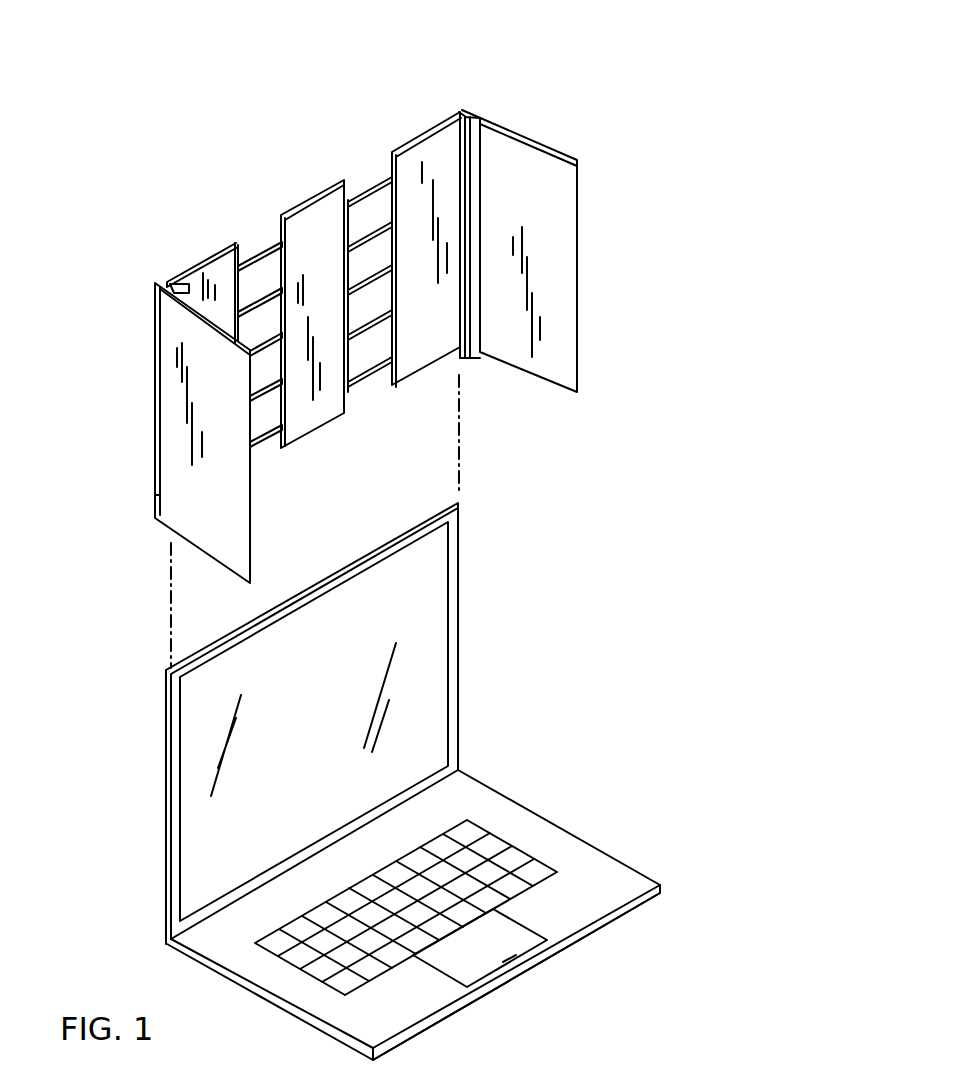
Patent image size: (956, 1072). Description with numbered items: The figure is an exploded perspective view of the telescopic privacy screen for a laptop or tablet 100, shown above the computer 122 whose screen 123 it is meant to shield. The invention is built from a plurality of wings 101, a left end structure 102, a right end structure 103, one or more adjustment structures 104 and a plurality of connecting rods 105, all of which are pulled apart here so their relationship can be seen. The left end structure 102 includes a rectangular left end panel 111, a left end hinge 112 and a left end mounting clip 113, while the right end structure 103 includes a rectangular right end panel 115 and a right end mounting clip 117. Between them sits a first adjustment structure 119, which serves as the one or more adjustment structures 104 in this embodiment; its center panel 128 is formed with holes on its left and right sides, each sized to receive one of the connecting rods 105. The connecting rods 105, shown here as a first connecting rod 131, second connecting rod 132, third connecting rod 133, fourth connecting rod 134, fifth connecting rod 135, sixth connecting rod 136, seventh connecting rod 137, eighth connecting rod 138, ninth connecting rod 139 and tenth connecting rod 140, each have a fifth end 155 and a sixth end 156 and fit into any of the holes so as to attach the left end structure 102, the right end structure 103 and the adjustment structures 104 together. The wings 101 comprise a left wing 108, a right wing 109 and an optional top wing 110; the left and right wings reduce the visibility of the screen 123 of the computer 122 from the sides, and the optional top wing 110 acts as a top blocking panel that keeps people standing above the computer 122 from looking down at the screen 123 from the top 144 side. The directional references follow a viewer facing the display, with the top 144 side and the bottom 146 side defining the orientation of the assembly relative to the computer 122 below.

The telescopic privacy screen for a laptop or tablet 100 is at (117, 125).
The plurality of wings 101 is at (187, 317).
The left end structure 102 is at (190, 419).
The right end structure 103 is at (575, 162).
The adjustment structures 104 is at (325, 188).
The plurality of connecting rods 105 is at (205, 257).
The left wing 108 is at (195, 500).
The right wing 109 is at (543, 268).
The optional top wing 110 is at (462, 108).
The left end panel 111 is at (193, 266).
The left end hinge 112 is at (157, 358).
The left end mounting clip 113 is at (183, 288).
The right end panel 115 is at (447, 120).
The right end mounting clip 117 is at (474, 115).
The first adjustment structure 119 is at (317, 417).
The computer 122 is at (535, 820).
The screen 123 is at (415, 632).
The center panel 128 is at (322, 303).
The first connecting rod 131 is at (262, 250).
The second connecting rod 132 is at (258, 310).
The third connecting rod 133 is at (258, 351).
The fourth connecting rod 134 is at (264, 392).
The fifth connecting rod 135 is at (257, 438).
The sixth connecting rod 136 is at (376, 193).
The seventh connecting rod 137 is at (366, 244).
The eighth connecting rod 138 is at (366, 287).
The ninth connecting rod 139 is at (366, 333).
The tenth connecting rod 140 is at (366, 380).
The top side 144 is at (417, 517).
The bottom side 146 is at (470, 1016).
The fifth end 155 is at (402, 152).
The sixth end 156 is at (289, 216).